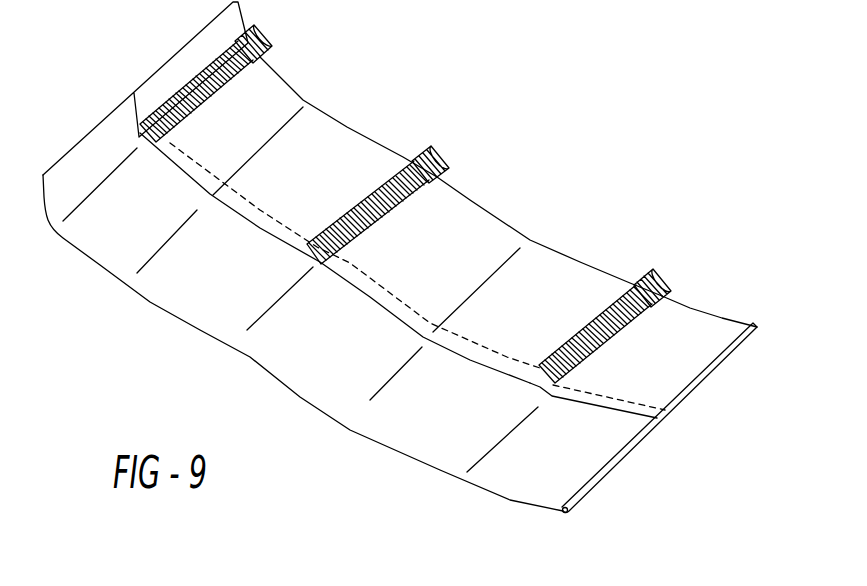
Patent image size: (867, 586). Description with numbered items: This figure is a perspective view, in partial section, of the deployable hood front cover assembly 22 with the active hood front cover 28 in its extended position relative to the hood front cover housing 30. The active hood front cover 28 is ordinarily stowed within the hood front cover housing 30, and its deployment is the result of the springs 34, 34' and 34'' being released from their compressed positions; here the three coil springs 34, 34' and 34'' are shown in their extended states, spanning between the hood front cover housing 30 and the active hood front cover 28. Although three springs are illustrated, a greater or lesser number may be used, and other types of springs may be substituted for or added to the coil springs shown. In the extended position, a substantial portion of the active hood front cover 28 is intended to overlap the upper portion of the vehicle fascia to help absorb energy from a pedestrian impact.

The deployable hood front cover assembly 22 is at (352, 158).
The active hood front cover 28 is at (183, 302).
The hood front cover housing 30 is at (558, 277).
The spring 34 is at (253, 71).
The spring 34' is at (434, 202).
The spring 34'' is at (641, 296).